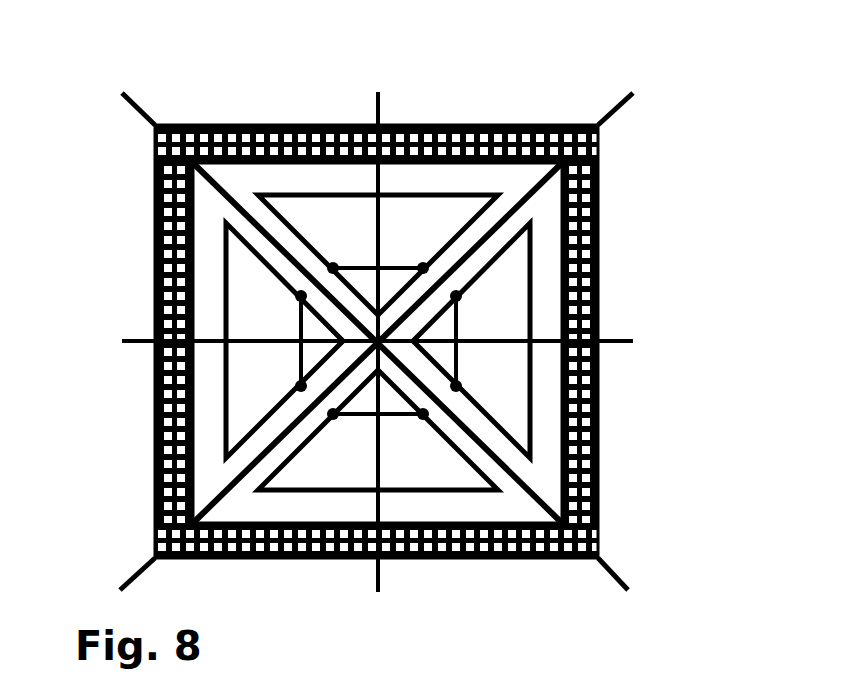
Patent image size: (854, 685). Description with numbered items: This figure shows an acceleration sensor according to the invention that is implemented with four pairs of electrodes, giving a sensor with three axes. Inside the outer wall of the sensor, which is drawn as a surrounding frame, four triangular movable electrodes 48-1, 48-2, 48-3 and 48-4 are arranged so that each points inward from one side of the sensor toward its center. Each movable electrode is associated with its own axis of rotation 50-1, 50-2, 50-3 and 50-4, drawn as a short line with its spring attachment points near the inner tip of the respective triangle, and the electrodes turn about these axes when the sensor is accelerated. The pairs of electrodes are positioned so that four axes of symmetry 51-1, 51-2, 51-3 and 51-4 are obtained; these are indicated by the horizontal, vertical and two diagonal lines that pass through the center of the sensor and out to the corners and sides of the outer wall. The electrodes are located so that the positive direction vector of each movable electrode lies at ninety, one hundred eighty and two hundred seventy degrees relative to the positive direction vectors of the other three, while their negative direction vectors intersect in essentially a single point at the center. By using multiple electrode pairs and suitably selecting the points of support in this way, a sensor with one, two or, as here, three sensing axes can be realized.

The triangular movable electrode 48-1 is at (530, 290).
The triangular movable electrode 48-2 is at (295, 491).
The triangular movable electrode 48-3 is at (230, 353).
The triangular movable electrode 48-4 is at (443, 193).
The axis of rotation 50-1 is at (460, 316).
The axis of rotation 50-2 is at (362, 416).
The axis of rotation 50-3 is at (301, 368).
The axis of rotation 50-4 is at (393, 263).
The axis of symmetry 51-1 is at (607, 113).
The axis of symmetry 51-2 is at (608, 338).
The axis of symmetry 51-3 is at (604, 563).
The axis of symmetry 51-4 is at (377, 582).